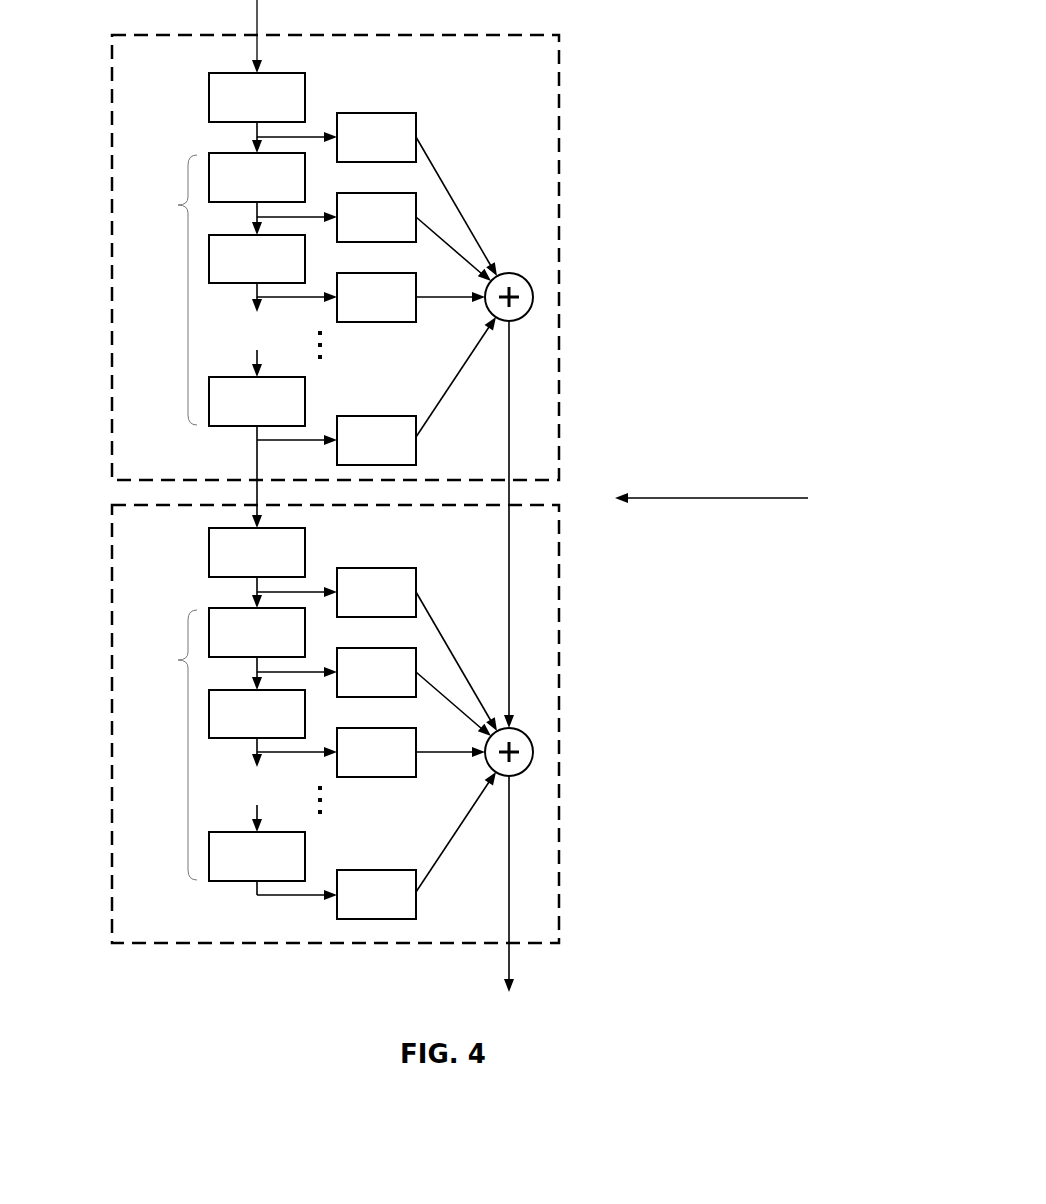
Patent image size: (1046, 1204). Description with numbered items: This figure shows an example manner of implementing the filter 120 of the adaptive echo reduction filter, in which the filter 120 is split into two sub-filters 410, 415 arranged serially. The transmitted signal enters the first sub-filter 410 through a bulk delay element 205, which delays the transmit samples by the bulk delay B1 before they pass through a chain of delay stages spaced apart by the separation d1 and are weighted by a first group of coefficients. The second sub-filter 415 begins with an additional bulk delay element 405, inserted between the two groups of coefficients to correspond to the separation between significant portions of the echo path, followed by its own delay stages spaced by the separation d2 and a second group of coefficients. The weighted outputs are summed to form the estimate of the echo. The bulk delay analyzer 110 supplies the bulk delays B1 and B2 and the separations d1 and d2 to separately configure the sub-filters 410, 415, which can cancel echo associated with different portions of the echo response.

The filter 120 is at (672, 48).
The sub-filter 410 is at (112, 145).
The sub-filter 415 is at (112, 563).
The bulk delay element 205 is at (209, 97).
The additional bulk delay element 405 is at (209, 552).
The bulk delay analyzer 110 is at (718, 488).